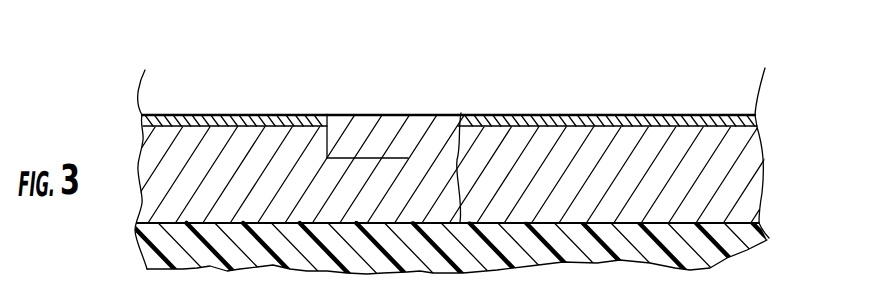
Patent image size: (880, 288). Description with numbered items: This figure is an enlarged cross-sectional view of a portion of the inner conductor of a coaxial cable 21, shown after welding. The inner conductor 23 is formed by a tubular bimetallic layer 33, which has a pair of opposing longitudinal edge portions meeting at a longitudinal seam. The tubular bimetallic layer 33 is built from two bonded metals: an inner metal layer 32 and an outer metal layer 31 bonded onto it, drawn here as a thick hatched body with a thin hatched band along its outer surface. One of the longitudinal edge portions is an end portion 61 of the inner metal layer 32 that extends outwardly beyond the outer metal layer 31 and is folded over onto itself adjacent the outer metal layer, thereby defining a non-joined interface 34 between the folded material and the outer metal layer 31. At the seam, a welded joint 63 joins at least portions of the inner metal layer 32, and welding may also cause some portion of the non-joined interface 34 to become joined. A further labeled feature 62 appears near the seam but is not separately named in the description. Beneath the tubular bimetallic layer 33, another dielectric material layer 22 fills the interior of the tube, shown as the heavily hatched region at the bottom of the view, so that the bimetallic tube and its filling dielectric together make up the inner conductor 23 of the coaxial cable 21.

The coaxial cable 21 is at (199, 91).
The another dielectric material layer 22 is at (750, 237).
The inner conductor 23 is at (664, 114).
The outer metal layer 31 is at (729, 120).
The inner metal layer 32 is at (752, 172).
The tubular bimetallic layer 33 is at (140, 170).
The non-joined interface 34 is at (363, 152).
The end portion 61 is at (452, 112).
The second surface region 62 is at (504, 112).
The welded joint 63 is at (461, 113).